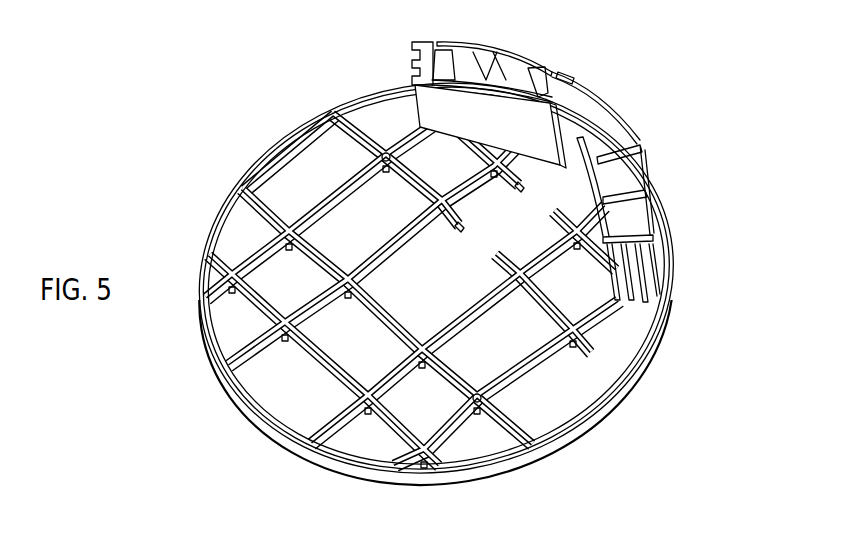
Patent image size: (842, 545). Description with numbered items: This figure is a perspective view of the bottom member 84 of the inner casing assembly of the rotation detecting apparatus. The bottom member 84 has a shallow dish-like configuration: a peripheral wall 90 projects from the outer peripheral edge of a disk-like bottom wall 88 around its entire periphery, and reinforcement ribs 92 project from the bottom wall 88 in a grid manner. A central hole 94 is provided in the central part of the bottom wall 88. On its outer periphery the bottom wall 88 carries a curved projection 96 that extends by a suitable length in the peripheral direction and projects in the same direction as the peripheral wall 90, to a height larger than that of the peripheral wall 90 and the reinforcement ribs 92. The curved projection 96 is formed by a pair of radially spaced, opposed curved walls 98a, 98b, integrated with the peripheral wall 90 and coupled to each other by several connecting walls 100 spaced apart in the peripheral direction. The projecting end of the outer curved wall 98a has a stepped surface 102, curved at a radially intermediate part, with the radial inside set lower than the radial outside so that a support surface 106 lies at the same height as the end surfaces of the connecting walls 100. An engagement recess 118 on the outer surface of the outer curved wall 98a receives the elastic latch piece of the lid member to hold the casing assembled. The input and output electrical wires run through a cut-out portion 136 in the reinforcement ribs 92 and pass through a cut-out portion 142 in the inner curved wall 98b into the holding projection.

The bottom member 84 is at (641, 376).
The bottom wall 88 is at (548, 418).
The peripheral wall 90 is at (290, 445).
The reinforcement ribs 92 is at (340, 427).
The central hole 94 is at (378, 268).
The curved projection 96 is at (593, 82).
The outer curved wall 98a is at (657, 268).
The inner curved wall 98b is at (610, 287).
The connecting walls 100 is at (423, 42).
The stepped surface 102 is at (428, 42).
The support surface 106 is at (590, 80).
The engagement recess 118 is at (556, 70).
The cut-out portion 136 is at (523, 191).
The cut-out portion 142 is at (559, 166).